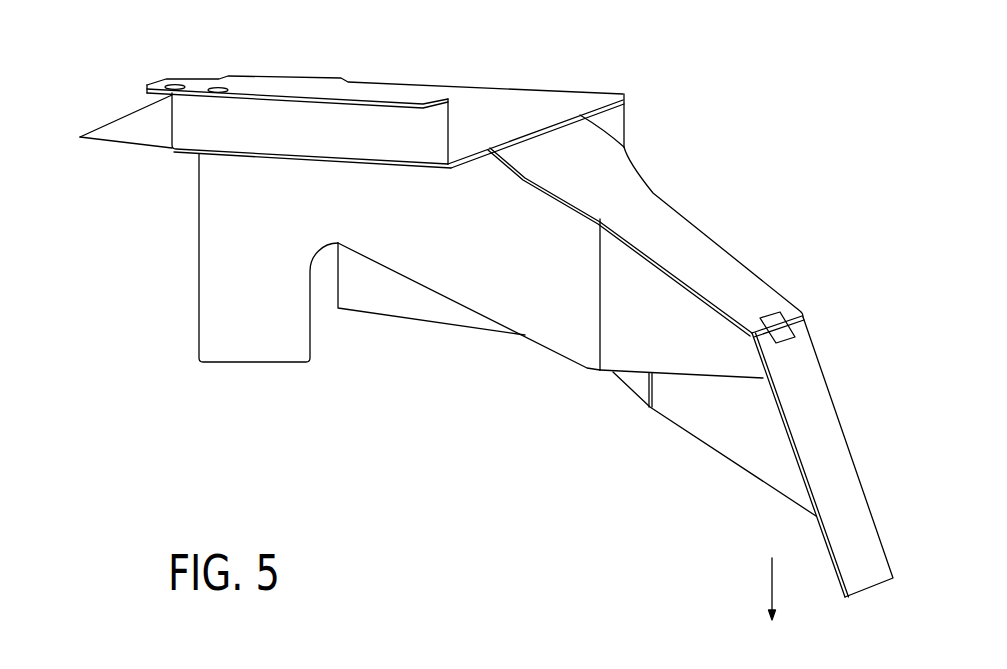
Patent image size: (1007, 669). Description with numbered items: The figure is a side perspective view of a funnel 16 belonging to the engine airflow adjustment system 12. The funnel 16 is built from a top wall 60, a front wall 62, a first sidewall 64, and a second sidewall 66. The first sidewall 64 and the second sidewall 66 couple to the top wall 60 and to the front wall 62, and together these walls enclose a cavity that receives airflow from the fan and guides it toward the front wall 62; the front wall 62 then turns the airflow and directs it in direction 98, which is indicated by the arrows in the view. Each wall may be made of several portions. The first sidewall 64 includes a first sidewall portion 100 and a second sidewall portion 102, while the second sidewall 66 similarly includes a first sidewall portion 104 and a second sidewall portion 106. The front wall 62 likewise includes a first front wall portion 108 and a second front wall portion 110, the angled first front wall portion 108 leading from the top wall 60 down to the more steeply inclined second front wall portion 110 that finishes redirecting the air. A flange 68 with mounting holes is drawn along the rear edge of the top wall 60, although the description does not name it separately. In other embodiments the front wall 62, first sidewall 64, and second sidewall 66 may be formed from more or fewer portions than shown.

The engine airflow adjustment system 12 is at (278, 470).
The funnel 16 is at (427, 55).
The top wall 60 is at (537, 102).
The front wall 62 is at (790, 278).
The first sidewall 64 is at (522, 447).
The second sidewall 66 is at (673, 168).
The mounting flange 68 is at (267, 89).
The direction 98 is at (155, 190).
The first sidewall portion 100 is at (488, 273).
The second sidewall portion 102 is at (635, 350).
The first sidewall portion 104 is at (380, 298).
The second sidewall portion 106 is at (737, 448).
The first front wall portion 108 is at (690, 238).
The second front wall portion 110 is at (832, 454).